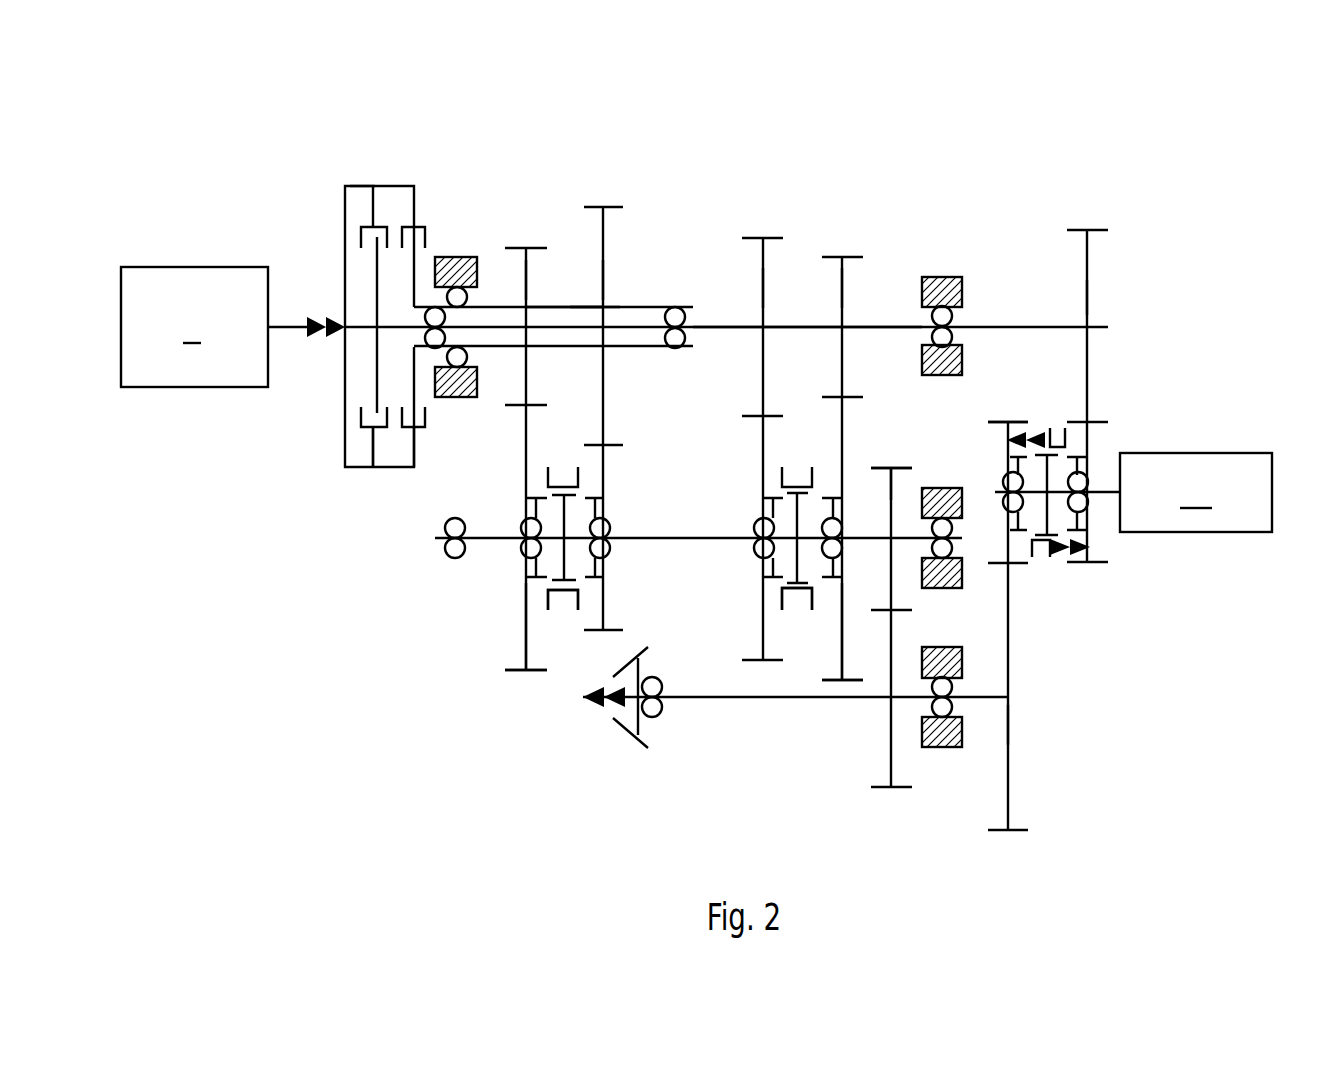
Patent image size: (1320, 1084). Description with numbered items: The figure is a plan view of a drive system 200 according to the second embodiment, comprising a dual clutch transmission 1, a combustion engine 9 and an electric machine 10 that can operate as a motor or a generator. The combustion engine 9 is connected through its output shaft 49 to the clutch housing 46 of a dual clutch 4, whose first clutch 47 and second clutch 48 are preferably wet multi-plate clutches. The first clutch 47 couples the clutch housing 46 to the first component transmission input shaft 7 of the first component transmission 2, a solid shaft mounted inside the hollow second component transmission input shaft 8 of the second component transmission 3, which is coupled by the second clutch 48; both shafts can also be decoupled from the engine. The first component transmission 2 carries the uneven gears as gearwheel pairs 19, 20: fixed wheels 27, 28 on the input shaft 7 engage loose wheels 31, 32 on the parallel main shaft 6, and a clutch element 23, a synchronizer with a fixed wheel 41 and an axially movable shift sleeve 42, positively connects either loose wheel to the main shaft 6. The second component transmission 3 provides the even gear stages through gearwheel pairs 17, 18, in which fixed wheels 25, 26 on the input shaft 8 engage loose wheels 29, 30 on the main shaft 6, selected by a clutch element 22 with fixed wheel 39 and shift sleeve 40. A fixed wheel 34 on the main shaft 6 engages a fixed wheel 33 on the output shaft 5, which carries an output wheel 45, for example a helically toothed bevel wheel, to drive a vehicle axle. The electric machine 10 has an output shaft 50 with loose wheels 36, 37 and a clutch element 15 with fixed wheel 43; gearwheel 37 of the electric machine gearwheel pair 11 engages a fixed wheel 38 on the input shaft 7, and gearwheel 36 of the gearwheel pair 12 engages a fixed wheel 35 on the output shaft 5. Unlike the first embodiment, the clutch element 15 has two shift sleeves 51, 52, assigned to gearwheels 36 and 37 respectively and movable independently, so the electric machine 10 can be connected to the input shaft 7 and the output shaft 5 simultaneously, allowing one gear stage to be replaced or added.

The drive system 200 is at (242, 162).
The dual clutch transmission 1 is at (680, 200).
The first component transmission 2 is at (894, 308).
The second component transmission 3 is at (563, 300).
The dual clutch 4 is at (349, 470).
The output shaft 5 is at (734, 697).
The main shaft 6 is at (488, 538).
The first component transmission input shaft 7 is at (862, 326).
The second component transmission input shaft 8 is at (591, 307).
The combustion engine 9 is at (194, 327).
The electric machine 10 is at (1196, 492).
The electric machine gearwheel pair 11 is at (1088, 262).
The electric machine gearwheel pair 12 is at (1007, 760).
The clutch element 15 is at (1052, 563).
The gearwheel pair 17 is at (520, 240).
The gearwheel pair 18 is at (603, 200).
The gearwheel pair 19 is at (757, 235).
The gearwheel pair 20 is at (842, 250).
The clutch element 22 is at (557, 608).
The clutch element 23 is at (792, 610).
The gearwheel 25 is at (526, 279).
The gearwheel 26 is at (603, 277).
The gearwheel 27 is at (763, 287).
The gearwheel 28 is at (842, 288).
The gearwheel 29 is at (565, 557).
The gearwheel 30 is at (598, 630).
The gearwheel 31 is at (797, 557).
The gearwheel 32 is at (839, 637).
The fixed wheel 33 is at (891, 759).
The fixed wheel 34 is at (889, 492).
The gearwheel 35 is at (1008, 724).
The gearwheel 36 is at (999, 422).
The gearwheel 37 is at (1088, 547).
The fixed wheel 38 is at (1087, 296).
The fixed wheel 39 is at (525, 615).
The shift sleeve 40 is at (578, 602).
The fixed wheel 41 is at (762, 605).
The shift sleeve 42 is at (812, 597).
The fixed wheel 43 is at (1047, 465).
The output wheel 45 is at (628, 729).
The clutch housing 46 is at (362, 186).
The first clutch 47 is at (373, 445).
The second clutch 48 is at (414, 445).
The output shaft 49 is at (287, 327).
The output shaft 50 is at (1102, 492).
The shift sleeve 51 is at (1037, 430).
The shift sleeve 52 is at (1063, 435).